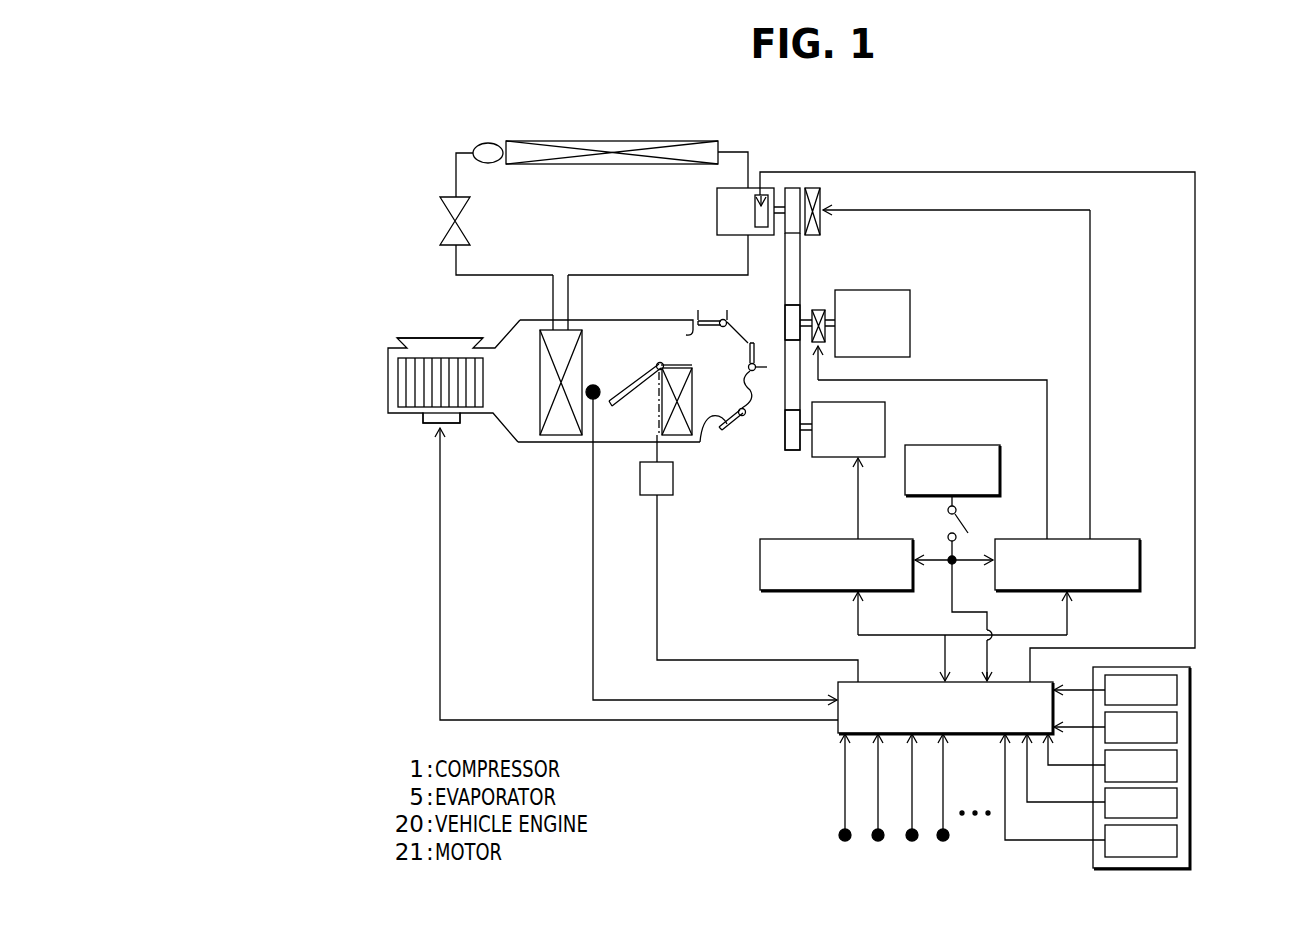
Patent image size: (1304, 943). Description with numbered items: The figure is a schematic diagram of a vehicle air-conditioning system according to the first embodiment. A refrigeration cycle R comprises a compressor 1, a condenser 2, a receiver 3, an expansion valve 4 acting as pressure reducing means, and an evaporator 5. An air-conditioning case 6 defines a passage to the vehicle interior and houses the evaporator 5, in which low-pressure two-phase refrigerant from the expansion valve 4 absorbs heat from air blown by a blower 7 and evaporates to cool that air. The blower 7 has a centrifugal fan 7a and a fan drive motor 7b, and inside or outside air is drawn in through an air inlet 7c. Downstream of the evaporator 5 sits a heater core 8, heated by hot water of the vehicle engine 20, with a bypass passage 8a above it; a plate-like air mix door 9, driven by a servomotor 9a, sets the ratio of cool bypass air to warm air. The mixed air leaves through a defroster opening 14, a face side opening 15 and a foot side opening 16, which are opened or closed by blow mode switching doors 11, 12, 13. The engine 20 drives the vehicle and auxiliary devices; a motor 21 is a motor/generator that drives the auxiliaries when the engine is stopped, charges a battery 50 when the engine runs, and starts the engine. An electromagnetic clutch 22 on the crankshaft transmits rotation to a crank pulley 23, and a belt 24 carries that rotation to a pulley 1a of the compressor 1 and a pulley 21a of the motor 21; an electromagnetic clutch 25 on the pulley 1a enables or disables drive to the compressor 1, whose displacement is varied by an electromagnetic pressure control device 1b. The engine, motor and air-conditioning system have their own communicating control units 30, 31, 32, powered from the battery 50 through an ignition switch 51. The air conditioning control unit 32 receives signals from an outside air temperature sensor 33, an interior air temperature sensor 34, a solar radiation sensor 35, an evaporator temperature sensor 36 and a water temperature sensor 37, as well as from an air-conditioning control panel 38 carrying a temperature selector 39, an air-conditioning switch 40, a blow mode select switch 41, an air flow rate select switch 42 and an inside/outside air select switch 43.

The refrigeration cycle R is at (727, 142).
The compressor 1 is at (755, 188).
The pulley 1a is at (794, 188).
The electromagnetic pressure control device 1b is at (755, 214).
The condenser 2 is at (640, 141).
The receiver 3 is at (488, 143).
The expansion valve 4 is at (440, 215).
The evaporator 5 is at (540, 356).
The air-conditioning case 6 is at (655, 490).
The blower 7 is at (383, 386).
The centrifugal fan 7a is at (410, 396).
The fan drive motor 7b is at (433, 425).
The air inlet 7c is at (425, 338).
The heater core 8 is at (680, 442).
The bypass passage 8a is at (678, 346).
The air mix door 9 is at (612, 406).
The servomotor 9a is at (657, 497).
The blow mode switching door 11 is at (688, 321).
The blow mode switching door 12 is at (750, 395).
The blow mode switching door 13 is at (716, 444).
The defroster opening 14 is at (713, 313).
The face side opening 15 is at (758, 346).
The foot side opening 16 is at (741, 428).
The vehicle engine 20 is at (895, 290).
The motor 21 is at (885, 411).
The pulley 21a is at (790, 452).
The electromagnetic clutch 22 is at (830, 347).
The crank pulley 23 is at (795, 316).
The belt 24 is at (790, 253).
The electromagnetic clutch 25 is at (822, 197).
The control unit 30 is at (1120, 539).
The control unit 31 is at (783, 592).
The air conditioning control unit 32 is at (838, 731).
The outside air temperature sensor 33 is at (840, 840).
The interior air temperature sensor 34 is at (876, 842).
The solar radiation sensor 35 is at (912, 842).
The evaporator temperature sensor 36 is at (590, 400).
The water temperature sensor 37 is at (947, 842).
The air-conditioning control panel 38 is at (1180, 668).
The temperature selector 39 is at (1177, 690).
The air-conditioning switch 40 is at (1177, 727).
The blow mode select switch 41 is at (1177, 766).
The air flow rate select switch 42 is at (1177, 803).
The inside/outside air select switch 43 is at (1177, 841).
The battery 50 is at (980, 445).
The ignition switch 51 is at (970, 526).